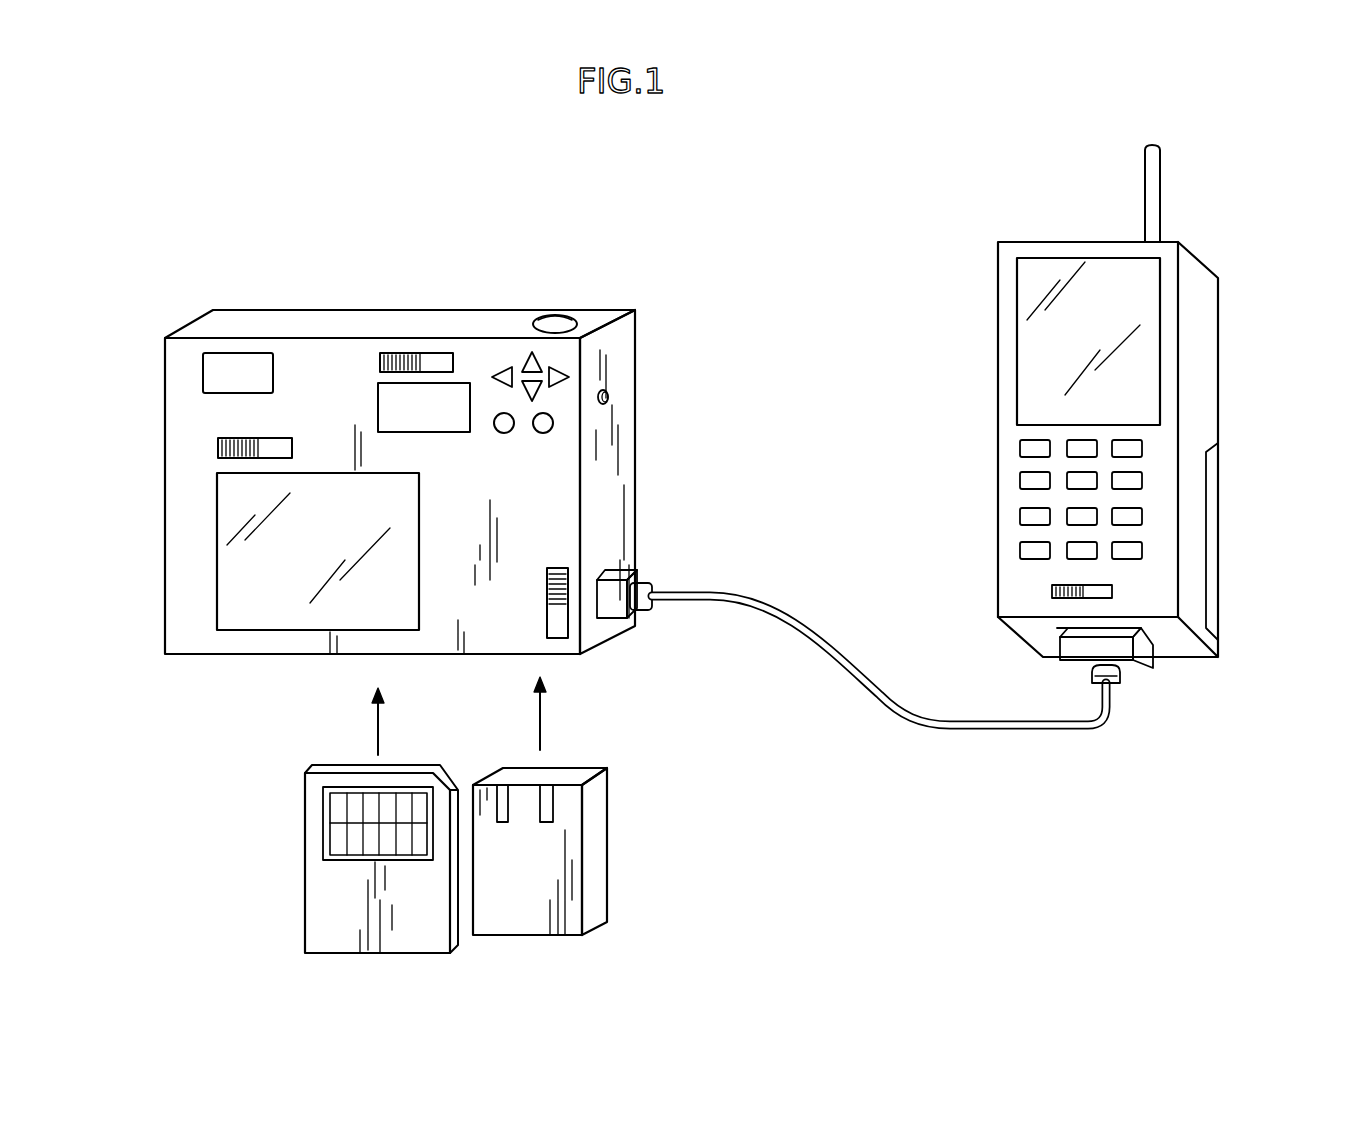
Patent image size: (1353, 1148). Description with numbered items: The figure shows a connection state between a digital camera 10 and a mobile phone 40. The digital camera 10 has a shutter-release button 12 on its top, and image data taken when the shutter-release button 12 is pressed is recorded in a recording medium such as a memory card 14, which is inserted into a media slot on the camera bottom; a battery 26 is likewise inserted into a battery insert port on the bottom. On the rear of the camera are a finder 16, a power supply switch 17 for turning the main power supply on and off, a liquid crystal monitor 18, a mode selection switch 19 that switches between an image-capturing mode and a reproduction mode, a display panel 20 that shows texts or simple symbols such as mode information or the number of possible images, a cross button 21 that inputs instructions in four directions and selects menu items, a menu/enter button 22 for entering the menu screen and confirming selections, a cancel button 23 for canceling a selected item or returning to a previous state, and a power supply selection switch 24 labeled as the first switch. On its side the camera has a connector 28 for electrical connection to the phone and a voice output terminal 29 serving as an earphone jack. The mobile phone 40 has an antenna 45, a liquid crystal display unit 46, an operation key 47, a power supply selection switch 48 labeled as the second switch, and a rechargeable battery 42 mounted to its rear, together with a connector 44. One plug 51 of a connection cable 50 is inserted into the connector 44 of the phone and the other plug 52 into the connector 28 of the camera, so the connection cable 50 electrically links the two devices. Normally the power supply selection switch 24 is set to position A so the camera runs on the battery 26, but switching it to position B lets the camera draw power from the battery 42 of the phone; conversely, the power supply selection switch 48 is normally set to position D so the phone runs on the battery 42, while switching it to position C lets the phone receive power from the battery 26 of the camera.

The digital camera 10 is at (292, 284).
The shutter-release button 12 is at (562, 318).
The memory card 14 is at (318, 912).
The finder 16 is at (215, 374).
The power supply switch 17 is at (235, 440).
The liquid crystal monitor 18 is at (225, 575).
The mode selection switch 19 is at (400, 353).
The display panel 20 is at (385, 410).
The cross button 21 is at (525, 355).
The menu/enter button 22 is at (503, 436).
The cancel button 23 is at (543, 436).
The power supply selection switch 24 is at (557, 568).
The battery 26 is at (600, 880).
The connector 28 is at (612, 620).
The voice output terminal 29 is at (615, 397).
The mobile phone 40 is at (1050, 216).
The battery 42 is at (1215, 540).
The connector 44 is at (1150, 660).
The antenna 45 is at (1155, 192).
The liquid crystal display unit 46 is at (1035, 372).
The operation key 47 is at (1027, 483).
The power supply selection switch 48 is at (1062, 585).
The connection cable 50 is at (915, 705).
The plug 51 is at (1135, 670).
The plug 52 is at (645, 615).